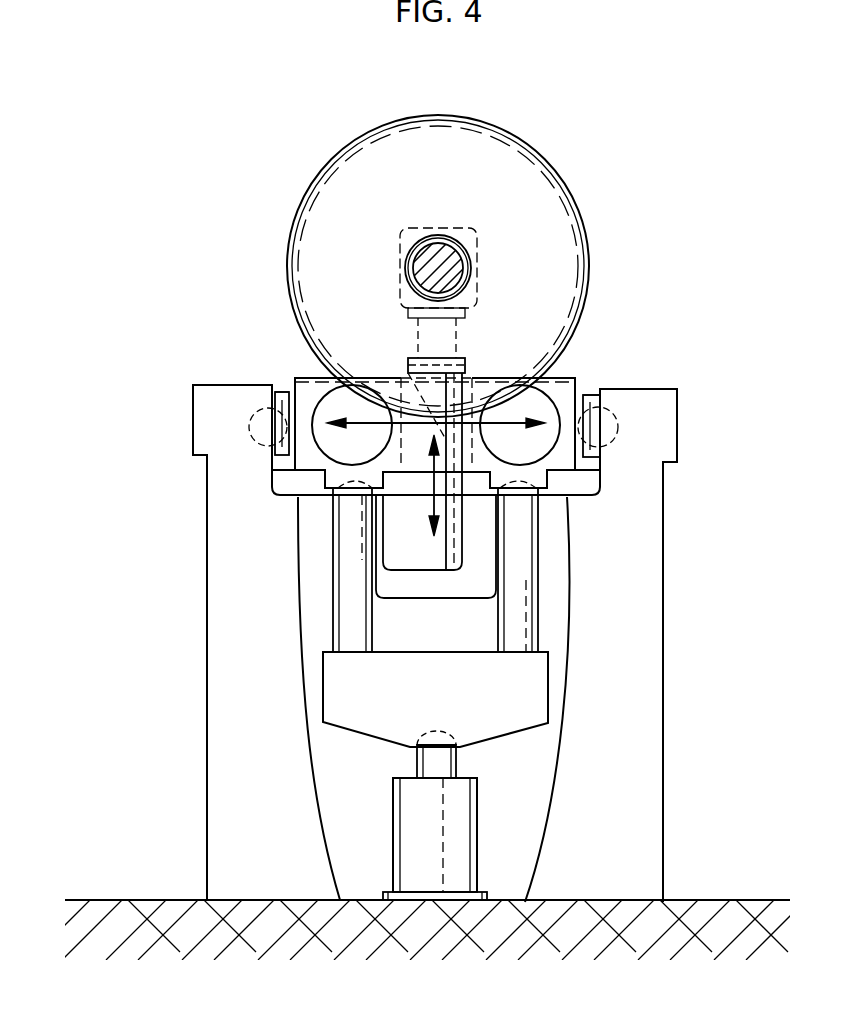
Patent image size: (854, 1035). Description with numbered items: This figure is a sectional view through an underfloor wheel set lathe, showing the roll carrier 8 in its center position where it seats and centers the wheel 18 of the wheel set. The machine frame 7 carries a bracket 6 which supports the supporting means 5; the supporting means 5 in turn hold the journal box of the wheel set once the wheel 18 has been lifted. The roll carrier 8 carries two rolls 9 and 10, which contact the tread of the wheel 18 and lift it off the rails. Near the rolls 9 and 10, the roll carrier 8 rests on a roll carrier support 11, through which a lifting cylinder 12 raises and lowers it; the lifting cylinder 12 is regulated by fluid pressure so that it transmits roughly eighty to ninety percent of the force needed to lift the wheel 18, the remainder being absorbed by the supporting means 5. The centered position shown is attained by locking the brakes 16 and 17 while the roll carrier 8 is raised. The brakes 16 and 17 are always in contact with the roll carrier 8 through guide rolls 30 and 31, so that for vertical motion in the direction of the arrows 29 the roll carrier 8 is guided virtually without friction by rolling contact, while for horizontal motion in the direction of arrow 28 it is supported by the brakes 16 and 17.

The supporting means 5 is at (448, 345).
The bracket 6 is at (457, 452).
The machine frame 7 is at (617, 567).
The roll carrier 8 is at (307, 382).
The roll 9 is at (537, 453).
The roll 10 is at (340, 442).
The roll carrier support 11 is at (518, 630).
The lifting cylinder 12 is at (453, 810).
The brake 16 is at (588, 397).
The brake 17 is at (280, 388).
The wheel 18 is at (535, 197).
The arrow 28 is at (418, 427).
The arrows 29 is at (432, 482).
The guide roll 30 is at (578, 430).
The guide roll 31 is at (280, 423).